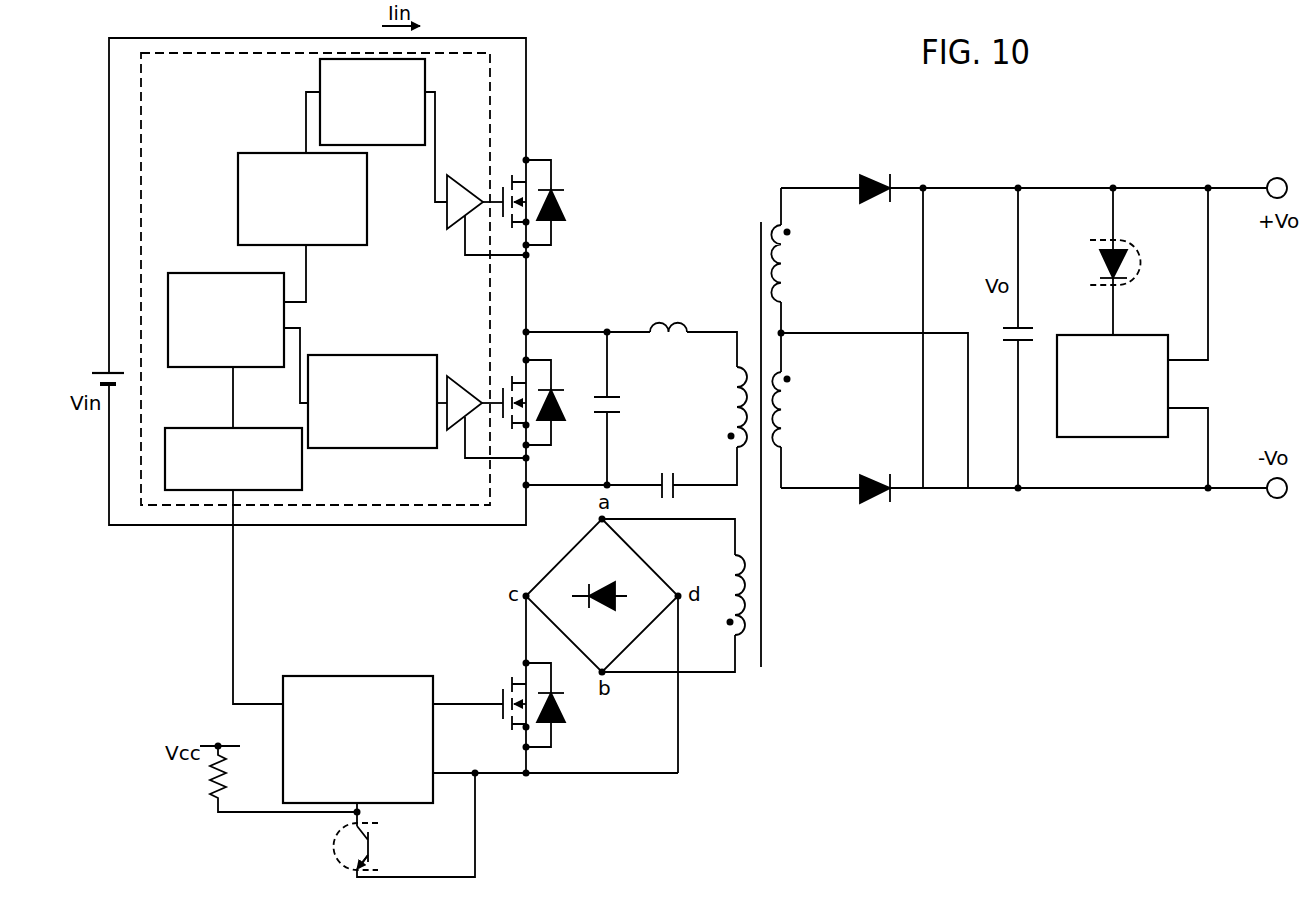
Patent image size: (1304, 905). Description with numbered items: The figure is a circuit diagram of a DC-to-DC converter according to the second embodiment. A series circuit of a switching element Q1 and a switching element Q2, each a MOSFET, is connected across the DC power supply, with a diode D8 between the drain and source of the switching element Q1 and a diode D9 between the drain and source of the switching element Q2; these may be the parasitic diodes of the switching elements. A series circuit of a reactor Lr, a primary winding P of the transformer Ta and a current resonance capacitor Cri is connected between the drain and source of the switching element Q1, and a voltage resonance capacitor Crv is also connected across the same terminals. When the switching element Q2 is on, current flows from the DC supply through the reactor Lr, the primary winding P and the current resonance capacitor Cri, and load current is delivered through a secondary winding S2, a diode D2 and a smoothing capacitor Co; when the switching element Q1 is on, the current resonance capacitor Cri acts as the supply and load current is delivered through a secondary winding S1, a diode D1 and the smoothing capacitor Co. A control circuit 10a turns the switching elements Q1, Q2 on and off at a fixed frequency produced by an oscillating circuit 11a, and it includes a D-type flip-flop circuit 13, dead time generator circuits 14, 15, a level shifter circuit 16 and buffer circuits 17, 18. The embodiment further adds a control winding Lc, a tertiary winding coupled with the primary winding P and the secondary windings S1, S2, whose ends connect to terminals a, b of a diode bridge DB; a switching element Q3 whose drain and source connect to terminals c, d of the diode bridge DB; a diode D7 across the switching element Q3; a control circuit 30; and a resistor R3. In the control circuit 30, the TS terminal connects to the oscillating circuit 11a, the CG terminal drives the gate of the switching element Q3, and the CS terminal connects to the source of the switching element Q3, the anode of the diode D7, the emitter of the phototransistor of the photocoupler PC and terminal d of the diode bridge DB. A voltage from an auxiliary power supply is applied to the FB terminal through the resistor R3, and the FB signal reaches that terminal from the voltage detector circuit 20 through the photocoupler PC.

The control circuit 10a is at (141, 243).
The oscillating circuit 11a is at (208, 427).
The D-type flip-flop circuit 13 is at (193, 273).
The dead time generator circuit 14 is at (378, 354).
The dead time generator circuit 15 is at (238, 192).
The level shifter circuit 16 is at (397, 146).
The buffer circuit 17 is at (462, 383).
The buffer circuit 18 is at (448, 227).
The voltage detector circuit 20 is at (1159, 335).
The control circuit 30 is at (353, 676).
The switching element Q1 is at (509, 417).
The switching element Q2 is at (509, 215).
The switching element Q3 is at (502, 696).
The diode D1 is at (875, 176).
The diode D2 is at (875, 500).
The diode D7 is at (562, 705).
The diode D8 is at (554, 404).
The diode D9 is at (563, 202).
The reactor Lr is at (668, 313).
The control winding Lc is at (728, 595).
The voltage resonance capacitor Crv is at (626, 408).
The current resonance capacitor Cri is at (685, 478).
The smoothing capacitor Co is at (1009, 338).
The transformer Ta is at (762, 430).
The primary winding P is at (732, 407).
The secondary winding S1 is at (793, 263).
The secondary winding S2 is at (793, 409).
The diode bridge DB is at (644, 565).
The resistor R3 is at (262, 779).
The photocoupler PC is at (1102, 261).